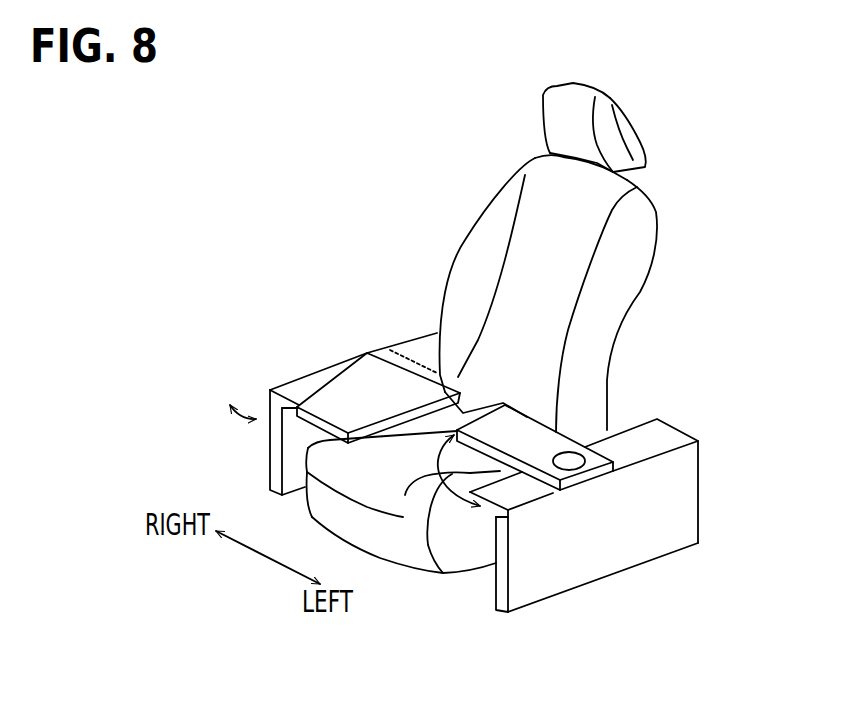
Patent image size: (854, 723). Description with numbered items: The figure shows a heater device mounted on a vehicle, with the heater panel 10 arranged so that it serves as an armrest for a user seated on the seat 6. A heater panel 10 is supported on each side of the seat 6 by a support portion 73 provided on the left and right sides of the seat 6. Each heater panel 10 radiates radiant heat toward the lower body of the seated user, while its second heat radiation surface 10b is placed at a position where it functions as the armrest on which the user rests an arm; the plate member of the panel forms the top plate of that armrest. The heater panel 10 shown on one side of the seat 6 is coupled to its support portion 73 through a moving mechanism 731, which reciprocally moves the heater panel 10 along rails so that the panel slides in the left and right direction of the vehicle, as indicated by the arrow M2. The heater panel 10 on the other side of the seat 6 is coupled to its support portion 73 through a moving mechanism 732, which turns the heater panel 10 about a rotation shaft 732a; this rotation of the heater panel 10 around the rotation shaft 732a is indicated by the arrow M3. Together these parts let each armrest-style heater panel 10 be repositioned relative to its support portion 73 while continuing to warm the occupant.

The seat 6 is at (573, 82).
The heater panel 10 is at (352, 407).
The second heat radiation surface 10b is at (367, 392).
The support portion 73 is at (298, 388).
The moving mechanism 731 is at (395, 361).
The moving mechanism 732 is at (607, 475).
The rotation shaft 732a is at (570, 465).
The arrow M2 is at (240, 418).
The arrow M3 is at (405, 495).